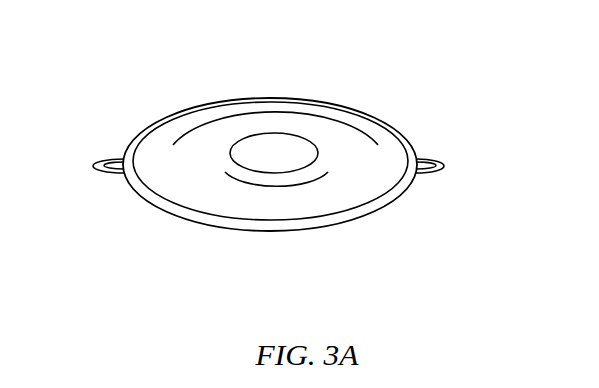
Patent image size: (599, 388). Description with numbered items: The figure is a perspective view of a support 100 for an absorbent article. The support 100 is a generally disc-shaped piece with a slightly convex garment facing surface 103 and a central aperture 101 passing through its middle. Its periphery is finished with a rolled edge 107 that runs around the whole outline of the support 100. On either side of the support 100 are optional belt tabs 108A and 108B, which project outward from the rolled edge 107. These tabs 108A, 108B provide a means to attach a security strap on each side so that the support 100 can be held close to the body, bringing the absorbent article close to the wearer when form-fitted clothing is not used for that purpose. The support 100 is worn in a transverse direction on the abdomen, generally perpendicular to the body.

The support 100 is at (429, 71).
The central aperture 101 is at (262, 134).
The garment facing surface 103 is at (307, 128).
The rolled edge 107 is at (190, 217).
The belt tab 108A is at (108, 158).
The belt tab 108B is at (433, 158).